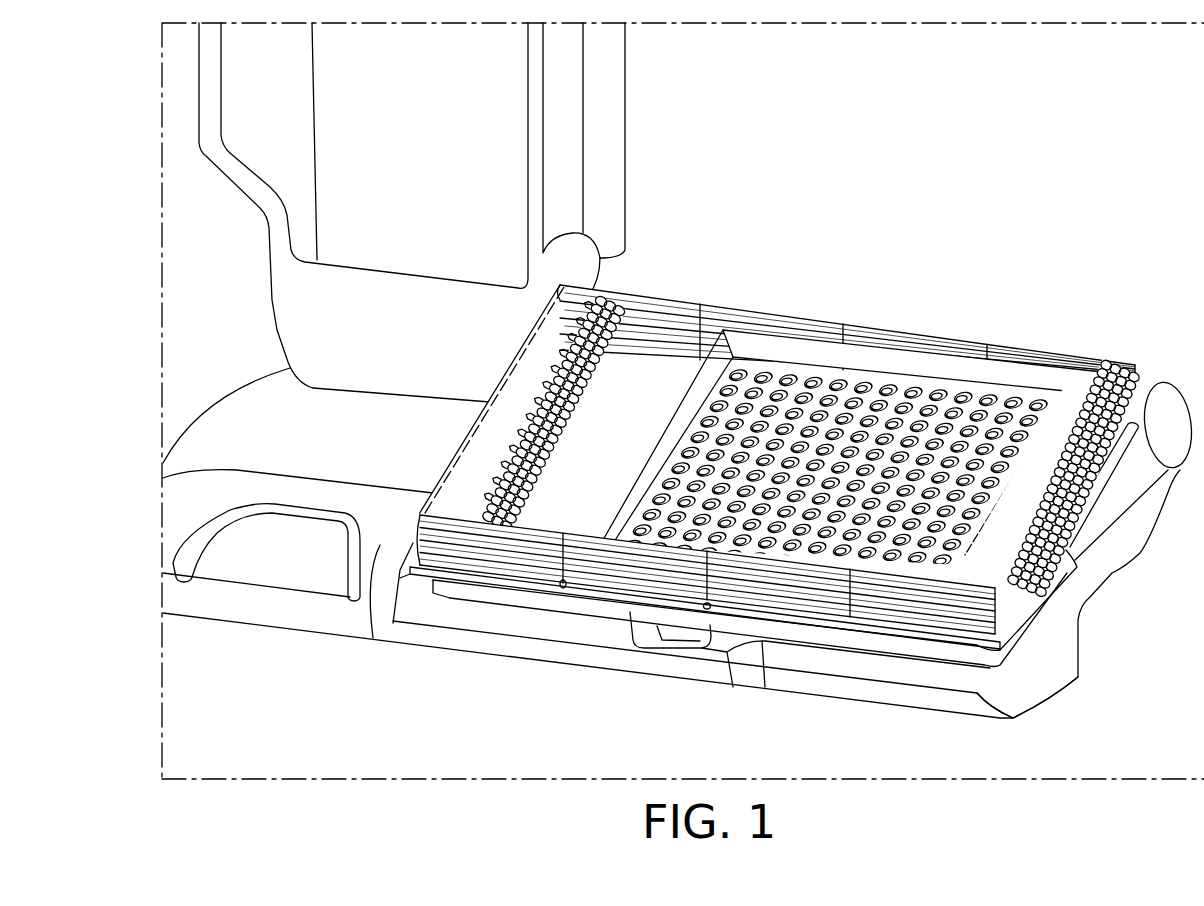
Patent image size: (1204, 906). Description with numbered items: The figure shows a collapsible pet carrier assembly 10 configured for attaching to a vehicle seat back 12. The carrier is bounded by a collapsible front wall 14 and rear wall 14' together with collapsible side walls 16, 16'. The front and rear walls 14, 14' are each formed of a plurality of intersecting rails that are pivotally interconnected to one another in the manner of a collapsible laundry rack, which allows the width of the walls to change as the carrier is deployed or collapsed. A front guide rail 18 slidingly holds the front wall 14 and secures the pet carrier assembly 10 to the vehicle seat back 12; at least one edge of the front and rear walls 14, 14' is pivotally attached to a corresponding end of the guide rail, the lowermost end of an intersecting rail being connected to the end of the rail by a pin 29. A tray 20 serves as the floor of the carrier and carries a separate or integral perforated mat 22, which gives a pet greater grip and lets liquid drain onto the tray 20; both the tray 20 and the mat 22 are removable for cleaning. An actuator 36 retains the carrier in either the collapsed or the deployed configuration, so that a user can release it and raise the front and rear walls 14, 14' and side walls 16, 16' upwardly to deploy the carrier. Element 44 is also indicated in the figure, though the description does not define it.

The collapsible pet carrier assembly 10 is at (862, 253).
The vehicle seat back 12 is at (1053, 580).
The front wall 14 is at (706, 541).
The rear wall 14' is at (847, 303).
The side wall 16 is at (510, 403).
The side wall 16' is at (1074, 448).
The front guide rail 18 is at (990, 663).
The tray 20 is at (873, 362).
The perforated mat 22 is at (683, 460).
The pin 29 is at (990, 650).
The actuator 36 is at (562, 588).
The connector ring 44 is at (708, 610).